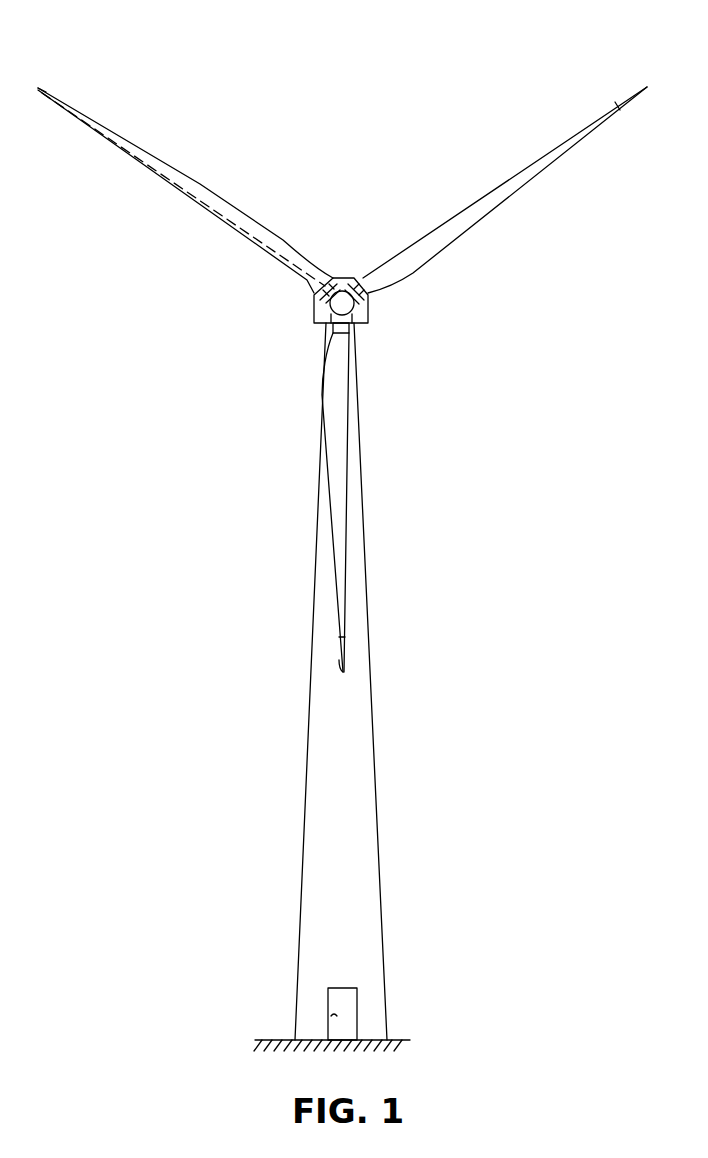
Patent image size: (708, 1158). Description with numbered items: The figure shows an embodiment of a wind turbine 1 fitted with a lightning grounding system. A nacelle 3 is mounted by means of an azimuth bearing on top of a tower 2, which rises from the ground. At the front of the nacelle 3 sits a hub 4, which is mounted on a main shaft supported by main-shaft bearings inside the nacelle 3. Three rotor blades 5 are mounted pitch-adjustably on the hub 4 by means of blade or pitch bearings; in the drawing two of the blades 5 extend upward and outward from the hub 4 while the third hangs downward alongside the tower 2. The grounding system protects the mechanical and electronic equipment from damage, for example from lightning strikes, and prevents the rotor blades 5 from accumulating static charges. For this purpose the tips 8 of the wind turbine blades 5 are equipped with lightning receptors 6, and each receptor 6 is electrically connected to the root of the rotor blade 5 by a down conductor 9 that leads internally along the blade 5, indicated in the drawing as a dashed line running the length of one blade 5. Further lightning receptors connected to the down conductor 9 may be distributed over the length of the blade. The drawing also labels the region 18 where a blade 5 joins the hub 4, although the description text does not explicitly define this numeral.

The wind turbine 1 is at (293, 883).
The tower 2 is at (369, 760).
The nacelle 3 is at (367, 322).
The hub 4 is at (322, 290).
The rotor blade 5 is at (345, 540).
The lightning receptor 6 is at (345, 655).
The tip 8 is at (40, 88).
The down conductor 9 is at (190, 195).
The blade root 18 is at (333, 287).